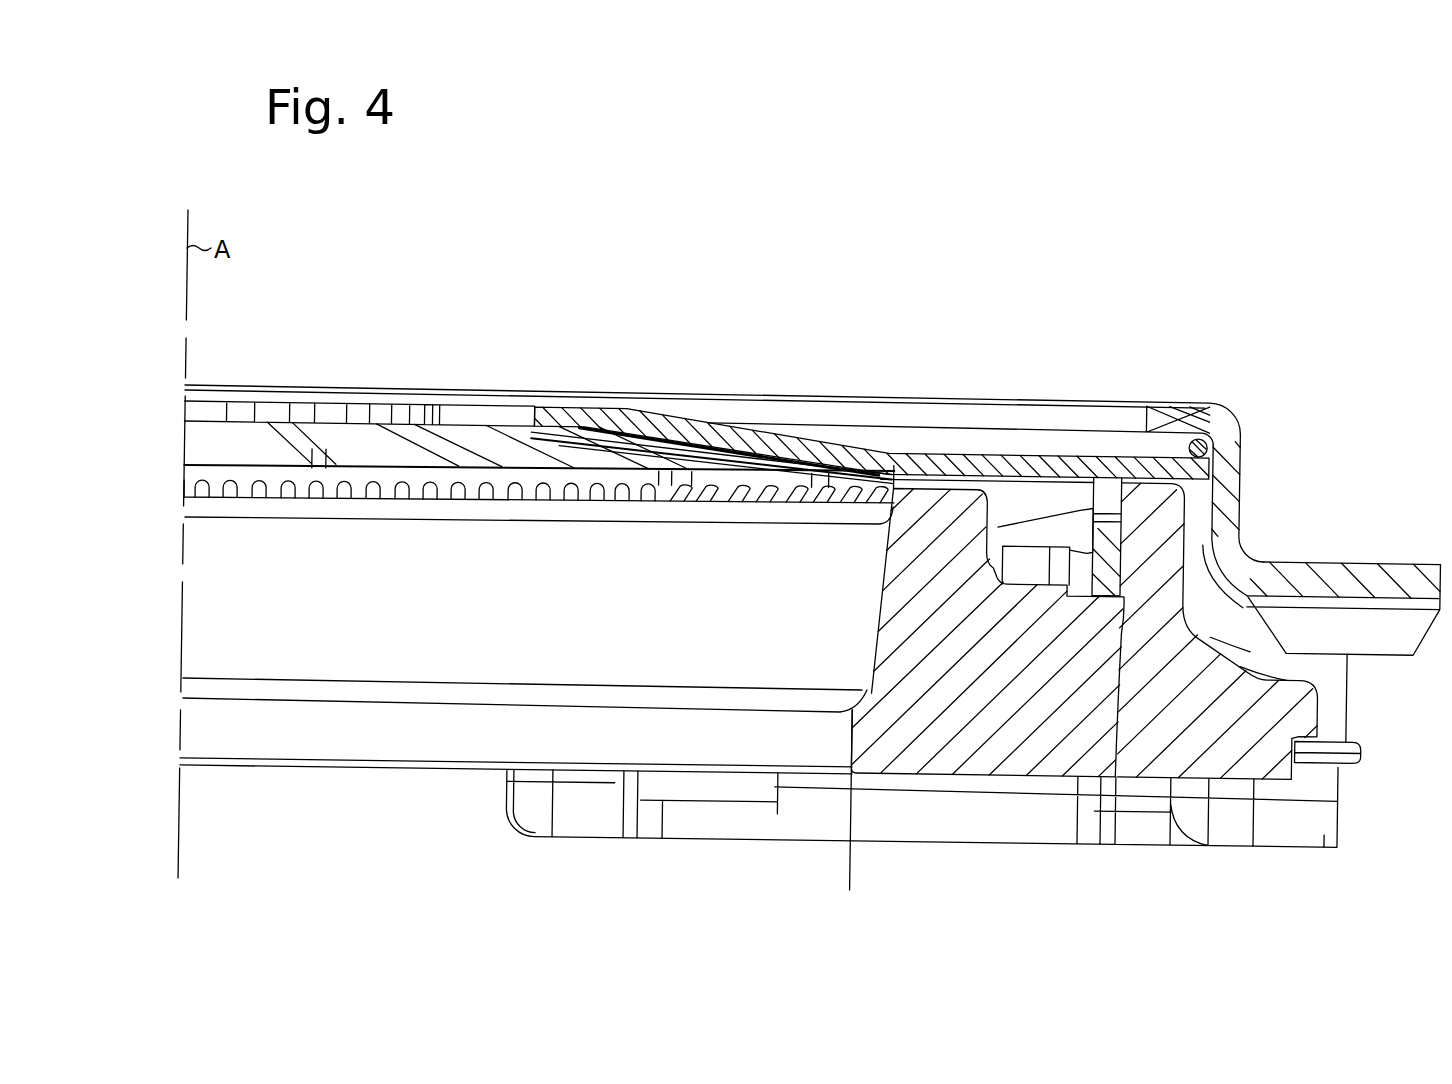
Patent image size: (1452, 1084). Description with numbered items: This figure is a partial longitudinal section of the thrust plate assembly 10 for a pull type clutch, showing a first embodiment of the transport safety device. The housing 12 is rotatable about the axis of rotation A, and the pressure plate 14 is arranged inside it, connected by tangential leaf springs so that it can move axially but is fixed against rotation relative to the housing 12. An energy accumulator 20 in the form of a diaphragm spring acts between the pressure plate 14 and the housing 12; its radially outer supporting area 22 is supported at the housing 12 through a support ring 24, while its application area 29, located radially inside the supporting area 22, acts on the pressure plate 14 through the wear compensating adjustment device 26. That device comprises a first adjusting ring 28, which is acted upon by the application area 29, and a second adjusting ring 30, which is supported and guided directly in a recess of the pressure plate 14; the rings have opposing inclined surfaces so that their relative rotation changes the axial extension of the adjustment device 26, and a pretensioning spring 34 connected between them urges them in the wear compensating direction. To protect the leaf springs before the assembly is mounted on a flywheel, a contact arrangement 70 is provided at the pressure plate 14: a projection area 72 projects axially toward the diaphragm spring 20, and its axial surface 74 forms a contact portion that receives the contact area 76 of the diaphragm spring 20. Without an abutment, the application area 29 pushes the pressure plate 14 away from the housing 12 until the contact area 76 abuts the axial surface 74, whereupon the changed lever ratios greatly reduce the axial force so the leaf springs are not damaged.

The thrust plate assembly 10 is at (1126, 220).
The housing 12 is at (1333, 545).
The pressure plate 14 is at (1037, 730).
The energy accumulator 20 is at (1091, 446).
The supporting area 22 is at (1096, 464).
The support ring 24 is at (1233, 385).
The wear compensating adjustment device 26 is at (1245, 482).
The first adjusting ring 28 is at (858, 703).
The application area 29 is at (1190, 386).
The second adjusting ring 30 is at (1125, 606).
The pretensioning spring 34 is at (464, 476).
The contact arrangement 70 is at (906, 449).
The projection area 72 is at (959, 449).
The axial surface 74 is at (929, 449).
The contact area 76 is at (891, 442).